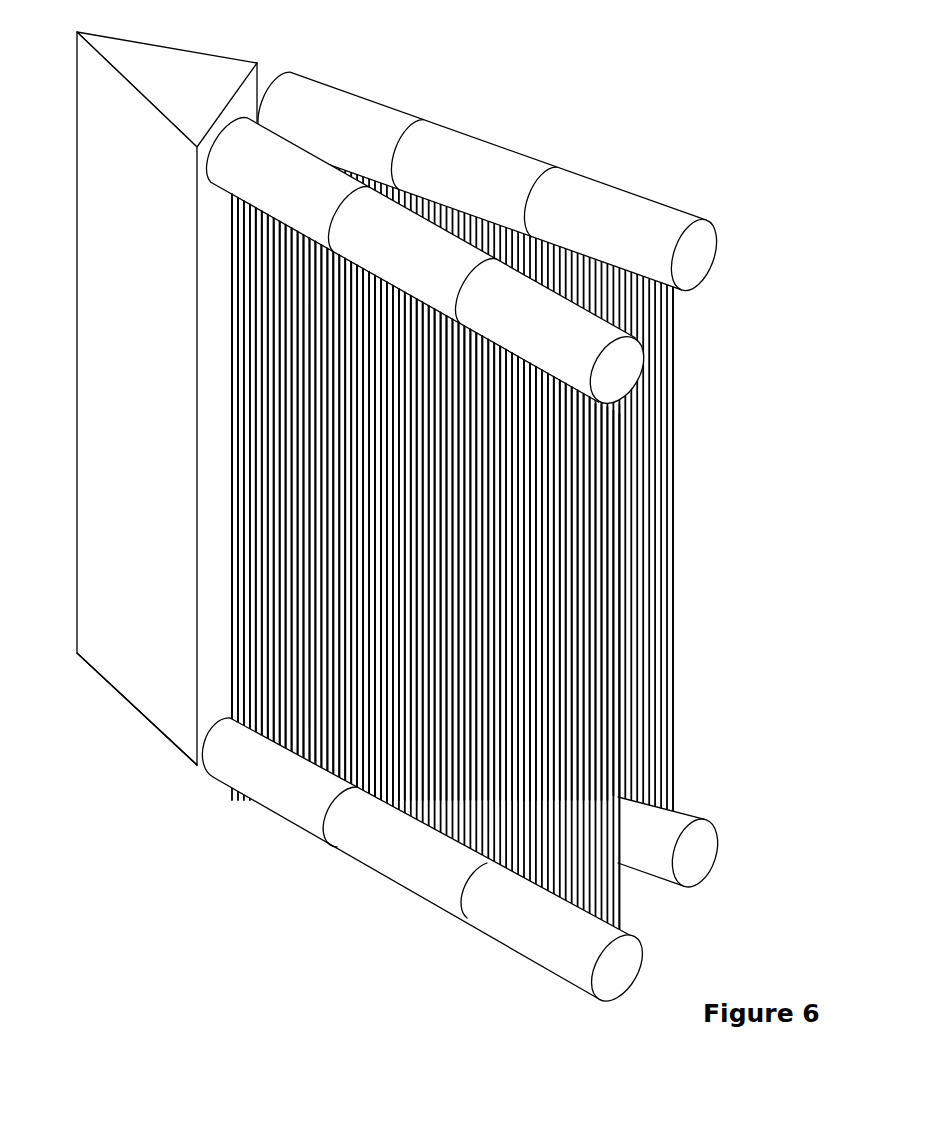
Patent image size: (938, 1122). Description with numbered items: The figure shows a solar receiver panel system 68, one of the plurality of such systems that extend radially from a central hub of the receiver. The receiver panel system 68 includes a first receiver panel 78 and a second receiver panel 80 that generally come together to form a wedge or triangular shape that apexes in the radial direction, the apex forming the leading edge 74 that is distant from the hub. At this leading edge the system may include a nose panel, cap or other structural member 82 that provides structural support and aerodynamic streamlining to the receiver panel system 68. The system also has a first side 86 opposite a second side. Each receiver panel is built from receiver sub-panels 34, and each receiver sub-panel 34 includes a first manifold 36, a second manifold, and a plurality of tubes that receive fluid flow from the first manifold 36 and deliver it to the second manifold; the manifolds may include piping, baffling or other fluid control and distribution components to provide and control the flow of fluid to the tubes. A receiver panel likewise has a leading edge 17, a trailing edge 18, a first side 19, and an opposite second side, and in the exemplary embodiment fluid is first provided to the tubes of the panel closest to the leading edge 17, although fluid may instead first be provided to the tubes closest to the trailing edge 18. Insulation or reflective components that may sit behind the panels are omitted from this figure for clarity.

The receiver panel system 68 is at (389, 521).
The leading edge 74 is at (132, 403).
The nose panel, cap or other structural member 82 is at (140, 717).
The second receiver panel 80 is at (488, 441).
The receiver sub-panel 34 is at (678, 208).
The first manifold 36 is at (693, 820).
The first receiver panel 78 is at (427, 864).
The first side 86 is at (272, 811).
The leading edge 17 is at (232, 607).
The trailing edge 18 is at (620, 718).
The first side 19 is at (276, 508).